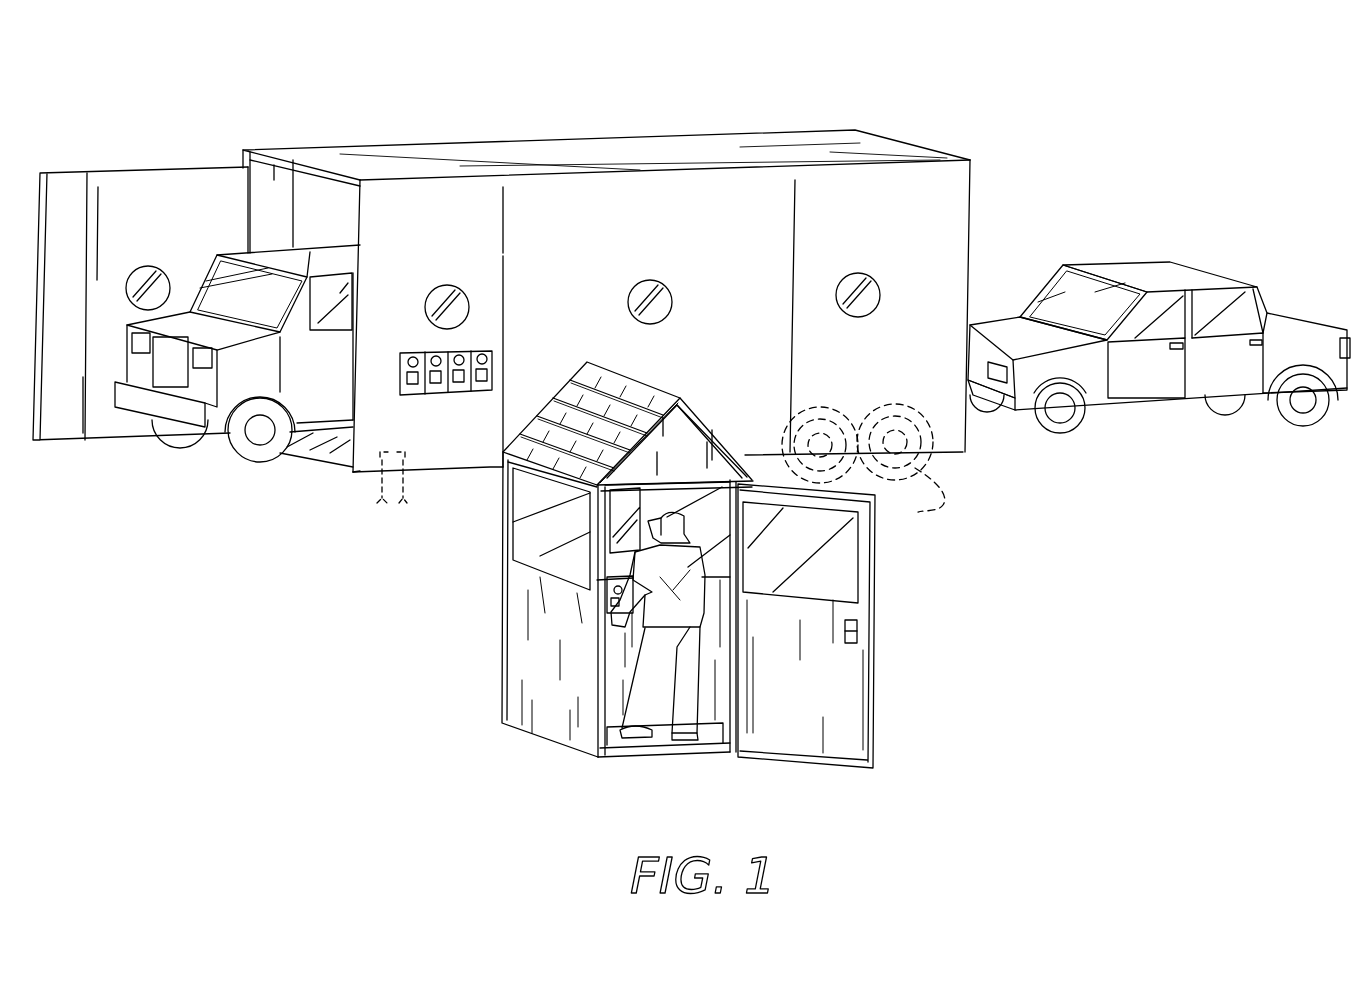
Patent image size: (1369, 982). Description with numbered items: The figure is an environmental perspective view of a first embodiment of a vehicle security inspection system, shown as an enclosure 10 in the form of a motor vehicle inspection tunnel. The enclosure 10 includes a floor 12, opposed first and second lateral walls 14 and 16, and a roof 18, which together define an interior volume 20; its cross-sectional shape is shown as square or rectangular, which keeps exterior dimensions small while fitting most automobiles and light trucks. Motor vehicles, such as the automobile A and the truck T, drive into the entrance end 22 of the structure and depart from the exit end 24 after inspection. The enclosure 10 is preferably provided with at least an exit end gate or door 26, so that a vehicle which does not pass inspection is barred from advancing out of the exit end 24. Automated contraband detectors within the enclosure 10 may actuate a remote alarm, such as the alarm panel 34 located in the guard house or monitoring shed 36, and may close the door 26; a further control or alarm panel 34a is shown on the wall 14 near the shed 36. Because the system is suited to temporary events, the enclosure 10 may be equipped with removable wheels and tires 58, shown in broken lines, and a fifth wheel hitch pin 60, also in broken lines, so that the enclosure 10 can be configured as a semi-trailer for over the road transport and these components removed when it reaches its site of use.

The enclosure 10 is at (385, 592).
The floor 12 is at (313, 463).
The first lateral wall 14 is at (714, 227).
The second lateral wall 16 is at (262, 199).
The roof 18 is at (600, 140).
The interior volume 20 is at (330, 193).
The entrance end 22 is at (973, 207).
The exit end 24 is at (265, 150).
The exit end gate or door 26 is at (87, 167).
The alarm panel 34 is at (576, 567).
The exterior control panel 34a is at (493, 358).
The guard house or monitoring shed 36 is at (503, 638).
The removable wheels and tires 58 is at (897, 516).
The fifth wheel hitch pin 60 is at (377, 508).
The automobile A is at (1143, 257).
The truck T is at (182, 428).